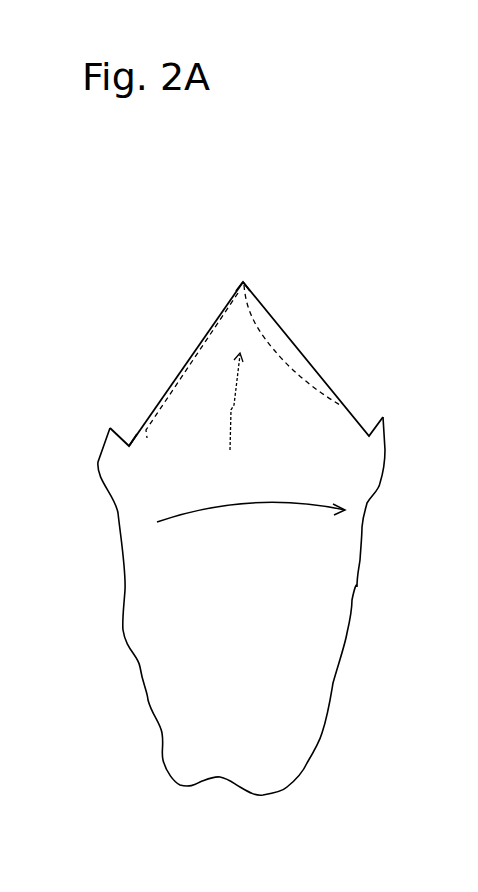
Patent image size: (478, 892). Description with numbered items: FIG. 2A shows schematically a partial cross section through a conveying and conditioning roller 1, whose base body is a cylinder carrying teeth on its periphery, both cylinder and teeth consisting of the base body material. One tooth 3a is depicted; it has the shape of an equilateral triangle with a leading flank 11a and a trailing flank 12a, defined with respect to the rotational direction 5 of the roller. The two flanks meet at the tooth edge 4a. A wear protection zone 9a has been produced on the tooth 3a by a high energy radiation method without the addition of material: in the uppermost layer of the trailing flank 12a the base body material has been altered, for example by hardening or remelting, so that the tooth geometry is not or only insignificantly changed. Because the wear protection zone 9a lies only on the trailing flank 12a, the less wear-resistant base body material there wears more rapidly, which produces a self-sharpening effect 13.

The conveying and conditioning roller 1 is at (248, 643).
The tooth 3a is at (230, 423).
The tooth edge 4a is at (243, 281).
The rotational direction 5 is at (258, 505).
The wear protection zone 9a is at (192, 360).
The leading flank 11a is at (310, 363).
The trailing flank 12a is at (135, 432).
The self-sharpening effect 13 is at (283, 362).